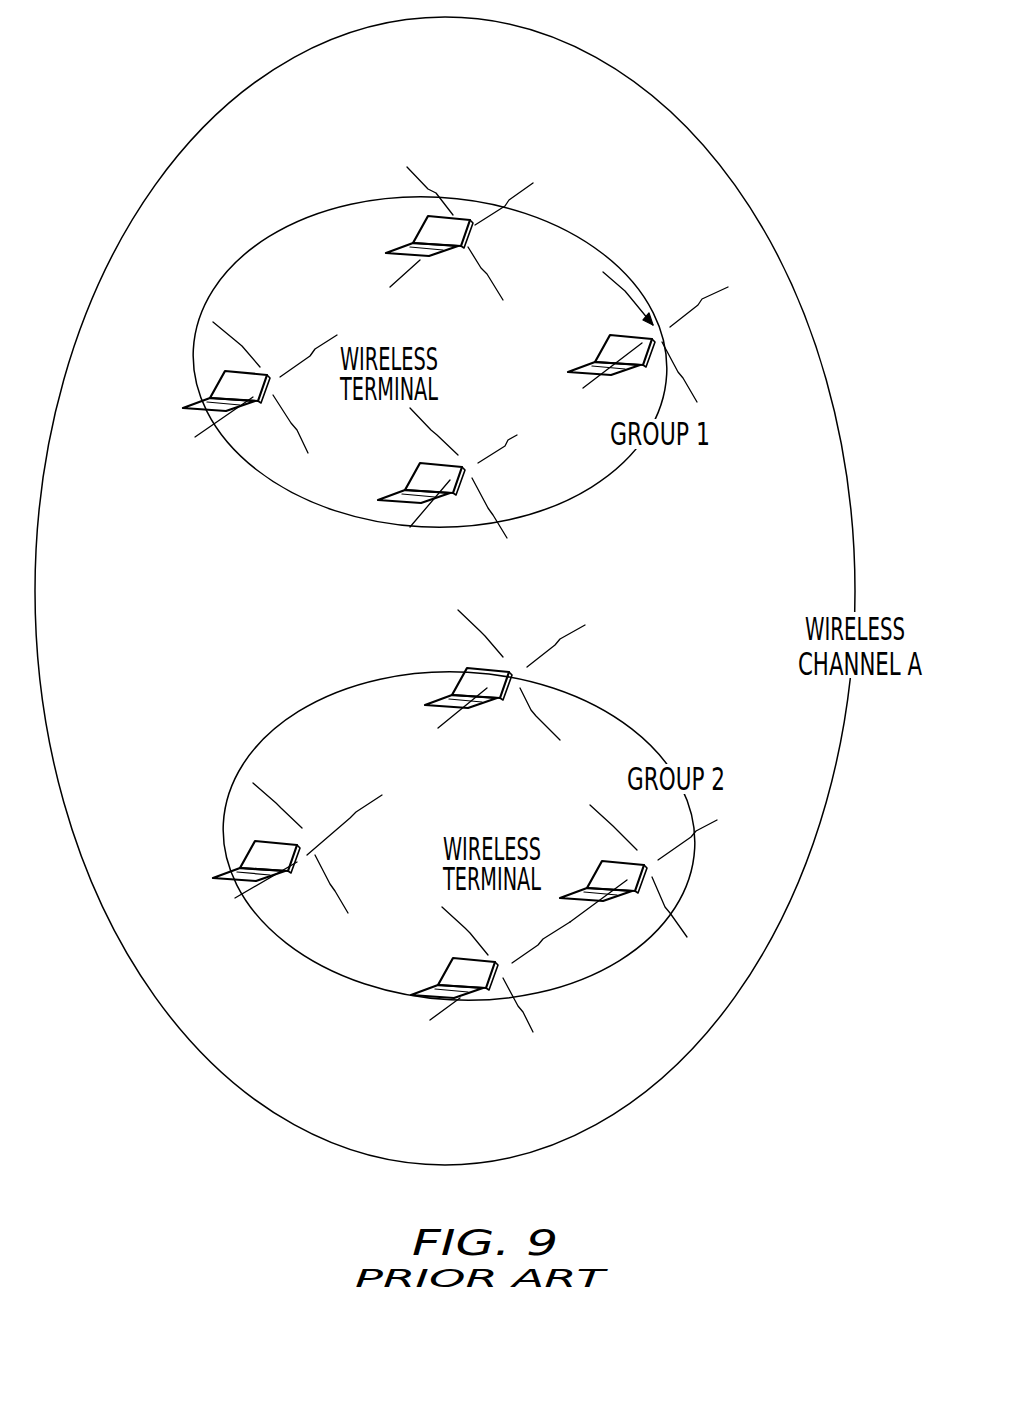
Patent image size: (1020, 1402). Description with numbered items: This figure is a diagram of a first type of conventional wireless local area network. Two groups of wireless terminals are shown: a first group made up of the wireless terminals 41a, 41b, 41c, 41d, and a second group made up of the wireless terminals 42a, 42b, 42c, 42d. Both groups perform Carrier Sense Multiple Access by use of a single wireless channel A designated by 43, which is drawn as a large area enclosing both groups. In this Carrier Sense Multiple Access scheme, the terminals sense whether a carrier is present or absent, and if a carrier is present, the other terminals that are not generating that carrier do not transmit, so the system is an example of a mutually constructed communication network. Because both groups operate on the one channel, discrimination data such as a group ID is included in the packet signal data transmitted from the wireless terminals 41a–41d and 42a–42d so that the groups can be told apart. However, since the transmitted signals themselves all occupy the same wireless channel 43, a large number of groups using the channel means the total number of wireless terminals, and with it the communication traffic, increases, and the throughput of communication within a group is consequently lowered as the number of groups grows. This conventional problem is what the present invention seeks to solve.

The wireless terminal 41a is at (270, 372).
The wireless terminal 41b is at (413, 480).
The wireless terminal 41c is at (595, 357).
The wireless terminal 41d is at (437, 257).
The wireless terminal 42a is at (323, 848).
The wireless terminal 42b is at (440, 977).
The wireless terminal 42c is at (600, 860).
The wireless terminal 42d is at (477, 710).
The wireless channel A 43 is at (773, 252).